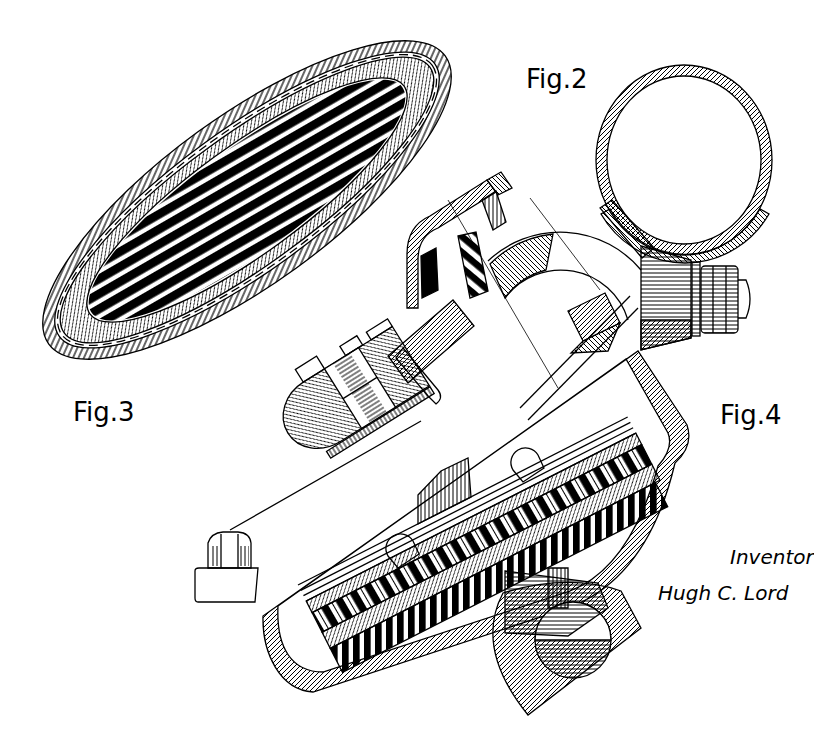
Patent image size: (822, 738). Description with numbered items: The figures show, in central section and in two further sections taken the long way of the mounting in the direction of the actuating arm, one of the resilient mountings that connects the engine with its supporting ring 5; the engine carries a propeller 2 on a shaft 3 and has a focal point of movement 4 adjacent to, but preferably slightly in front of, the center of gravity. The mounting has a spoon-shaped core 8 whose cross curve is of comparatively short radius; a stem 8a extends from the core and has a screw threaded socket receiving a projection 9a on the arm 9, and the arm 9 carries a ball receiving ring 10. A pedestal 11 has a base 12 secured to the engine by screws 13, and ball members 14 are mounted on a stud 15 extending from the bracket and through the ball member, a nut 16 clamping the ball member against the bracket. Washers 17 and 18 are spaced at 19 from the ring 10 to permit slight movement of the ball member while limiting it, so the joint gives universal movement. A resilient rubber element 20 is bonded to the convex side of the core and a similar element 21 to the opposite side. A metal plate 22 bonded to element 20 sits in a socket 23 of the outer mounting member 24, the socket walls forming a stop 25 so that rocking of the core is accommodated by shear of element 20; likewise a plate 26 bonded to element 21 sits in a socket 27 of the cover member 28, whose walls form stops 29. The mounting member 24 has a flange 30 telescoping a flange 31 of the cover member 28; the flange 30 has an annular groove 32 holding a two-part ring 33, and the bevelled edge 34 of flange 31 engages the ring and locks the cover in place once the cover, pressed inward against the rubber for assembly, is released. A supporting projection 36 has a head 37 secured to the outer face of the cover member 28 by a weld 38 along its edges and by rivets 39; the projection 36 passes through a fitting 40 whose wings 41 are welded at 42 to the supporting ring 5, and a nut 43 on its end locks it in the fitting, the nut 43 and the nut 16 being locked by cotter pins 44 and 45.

In FIG. 3, the propeller 2 is at (212, 157).
In FIG. 2, the shaft 3 is at (436, 190).
In FIG. 3, the focal point of movement 4 is at (413, 72).
In FIG. 2, the focal point of movement 4 is at (521, 189).
In FIG. 4, the focal point of movement 4 is at (313, 311).
In FIG. 2, the supporting ring 5 is at (758, 125).
In FIG. 3, the core 8 is at (267, 100).
In FIG. 2, the core 8 is at (446, 212).
In FIG. 4, the core 8 is at (320, 643).
In FIG. 2, the stem 8a is at (452, 352).
In FIG. 4, the stem 8a is at (452, 352).
In FIG. 2, the arm 9 is at (407, 337).
In FIG. 4, the arm 9 is at (374, 323).
In FIG. 2, the projection 9a is at (430, 363).
In FIG. 4, the projection 9a is at (430, 364).
In FIG. 4, the ball receiving ring 10 is at (296, 417).
In FIG. 4, the pedestal 11 is at (273, 497).
In FIG. 4, the base 12 is at (212, 580).
In FIG. 4, the screws 13 is at (202, 528).
In FIG. 4, the ball members 14 is at (322, 389).
In FIG. 4, the stud 15 is at (306, 391).
In FIG. 4, the nut 16 is at (290, 352).
In FIG. 4, the washer 17 is at (357, 321).
In FIG. 4, the washer 18 is at (428, 392).
In FIG. 4, the space 19 is at (293, 387).
In FIG. 2, the element of resilient material 20 is at (410, 258).
In FIG. 4, the element of resilient material 20 is at (658, 451).
In FIG. 2, the element of resilient material 21 is at (465, 212).
In FIG. 4, the element of resilient material 21 is at (637, 407).
In FIG. 2, the metal plate 22 is at (398, 263).
In FIG. 4, the metal plate 22 is at (648, 468).
In FIG. 2, the socket 23 is at (404, 277).
In FIG. 4, the socket 23 is at (643, 487).
In FIG. 2, the outer mounting member 24 is at (401, 222).
In FIG. 4, the outer mounting member 24 is at (630, 503).
In FIG. 2, the stop 25 is at (398, 243).
In FIG. 4, the stop 25 is at (668, 431).
In FIG. 2, the plate 26 is at (586, 335).
In FIG. 2, the socket 27 is at (570, 292).
In FIG. 2, the cover member 28 is at (543, 288).
In FIG. 2, the stops 29 is at (477, 184).
In FIG. 4, the stops 29 is at (277, 625).
In FIG. 3, the flange 30 is at (122, 181).
In FIG. 2, the flange 30 is at (470, 183).
In FIG. 4, the flange 30 is at (253, 612).
In FIG. 3, the flange 31 is at (100, 211).
In FIG. 2, the flange 31 is at (582, 332).
In FIG. 4, the flange 31 is at (272, 608).
In FIG. 2, the annular groove 32 is at (484, 178).
In FIG. 4, the annular groove 32 is at (257, 620).
In FIG. 2, the ring 33 is at (491, 175).
In FIG. 4, the ring 33 is at (257, 611).
In FIG. 2, the bevelled edge 34 is at (582, 318).
In FIG. 4, the bevelled edge 34 is at (280, 611).
In FIG. 3, the supporting projection 36 is at (180, 141).
In FIG. 2, the supporting projection 36 is at (562, 232).
In FIG. 4, the supporting projection 36 is at (436, 470).
In FIG. 3, the head 37 is at (243, 147).
In FIG. 2, the head 37 is at (510, 258).
In FIG. 4, the head 37 is at (483, 453).
In FIG. 2, the weld 38 is at (513, 241).
In FIG. 3, the rivets 39 is at (302, 130).
In FIG. 2, the rivets 39 is at (580, 238).
In FIG. 2, the fitting 40 is at (665, 326).
In FIG. 2, the wings 41 is at (596, 206).
In FIG. 2, the weld 42 is at (596, 197).
In FIG. 2, the nut 43 is at (723, 323).
In FIG. 2, the cotter pin 44 is at (745, 290).
In FIG. 4, the cotter pin 45 is at (305, 327).